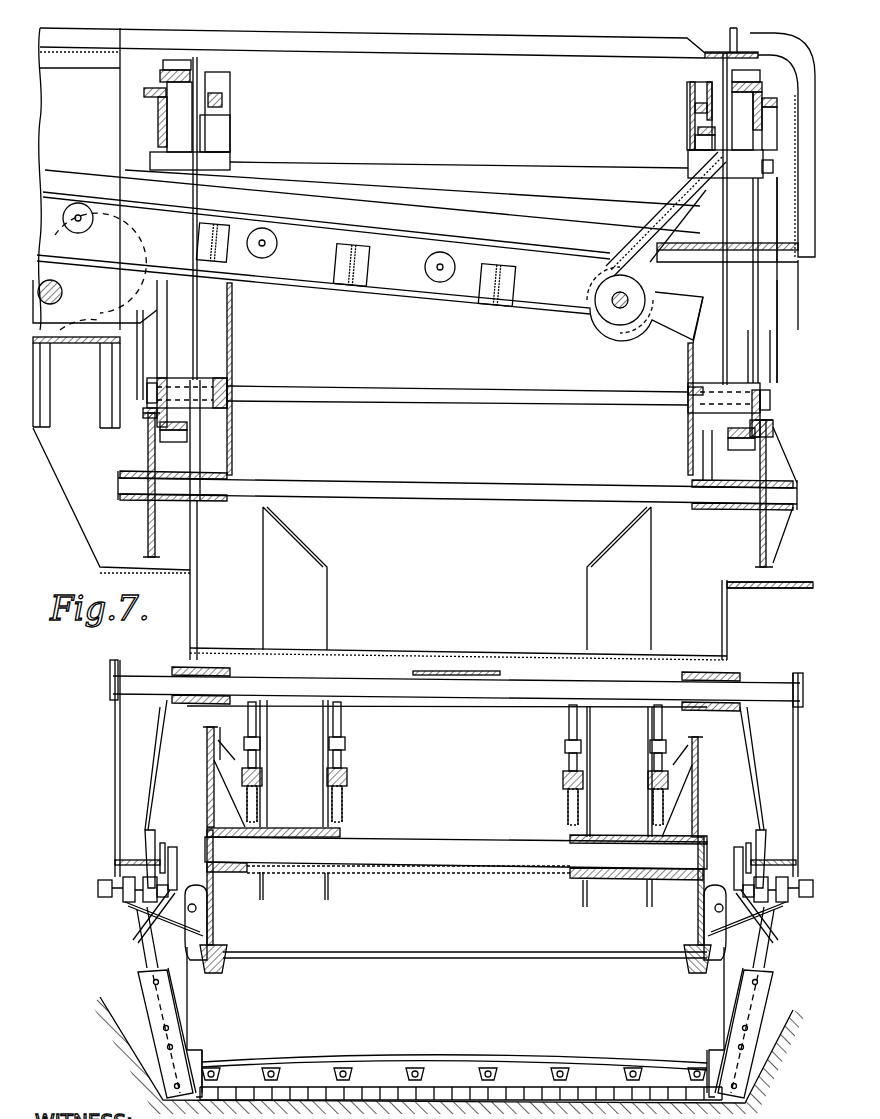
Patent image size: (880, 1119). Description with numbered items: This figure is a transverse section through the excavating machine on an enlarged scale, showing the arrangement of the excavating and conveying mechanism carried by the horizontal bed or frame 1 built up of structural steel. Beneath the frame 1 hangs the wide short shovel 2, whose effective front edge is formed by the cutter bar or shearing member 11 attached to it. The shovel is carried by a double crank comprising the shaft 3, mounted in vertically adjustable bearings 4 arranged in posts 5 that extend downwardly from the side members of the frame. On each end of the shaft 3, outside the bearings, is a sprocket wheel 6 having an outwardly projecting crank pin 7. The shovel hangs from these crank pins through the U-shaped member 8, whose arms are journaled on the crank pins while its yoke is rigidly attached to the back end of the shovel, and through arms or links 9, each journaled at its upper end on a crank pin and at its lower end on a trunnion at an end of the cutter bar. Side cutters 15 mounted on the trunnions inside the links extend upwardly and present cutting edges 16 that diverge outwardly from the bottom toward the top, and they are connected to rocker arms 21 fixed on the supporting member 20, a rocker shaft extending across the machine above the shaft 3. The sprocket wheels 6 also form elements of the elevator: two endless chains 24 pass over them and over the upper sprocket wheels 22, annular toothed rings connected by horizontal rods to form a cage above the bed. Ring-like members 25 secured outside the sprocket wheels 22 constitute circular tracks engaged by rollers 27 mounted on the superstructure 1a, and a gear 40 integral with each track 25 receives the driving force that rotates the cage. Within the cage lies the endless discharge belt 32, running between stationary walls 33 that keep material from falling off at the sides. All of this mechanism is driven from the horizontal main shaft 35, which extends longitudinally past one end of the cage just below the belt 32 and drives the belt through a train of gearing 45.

The bed or frame 1 is at (185, 621).
The superstructure 1a is at (490, 40).
The shovel 2 is at (454, 1022).
The shaft 3 is at (450, 872).
The bearings 4 is at (335, 830).
The posts 5 is at (456, 768).
The sprocket wheels 6 is at (222, 790).
The crank pin 7 is at (160, 867).
The U-shaped member 8 is at (190, 940).
The arms or links 9 is at (125, 913).
The cutter bar or shearing member 11 is at (318, 1072).
The leg 15 is at (135, 943).
The cutting edges 16 is at (131, 986).
The supporting member 20 is at (512, 688).
The rocker arm 21 is at (123, 760).
The sprocket wheels 22 is at (218, 88).
The endless chains 24 is at (232, 444).
The ring-like members 25 is at (147, 366).
The rollers 27 is at (145, 525).
The endless belt 32 is at (420, 277).
The stationary walls 33 is at (498, 210).
The main shaft 35 is at (60, 296).
The gear 40 is at (177, 413).
The train of gearing 45 is at (105, 290).